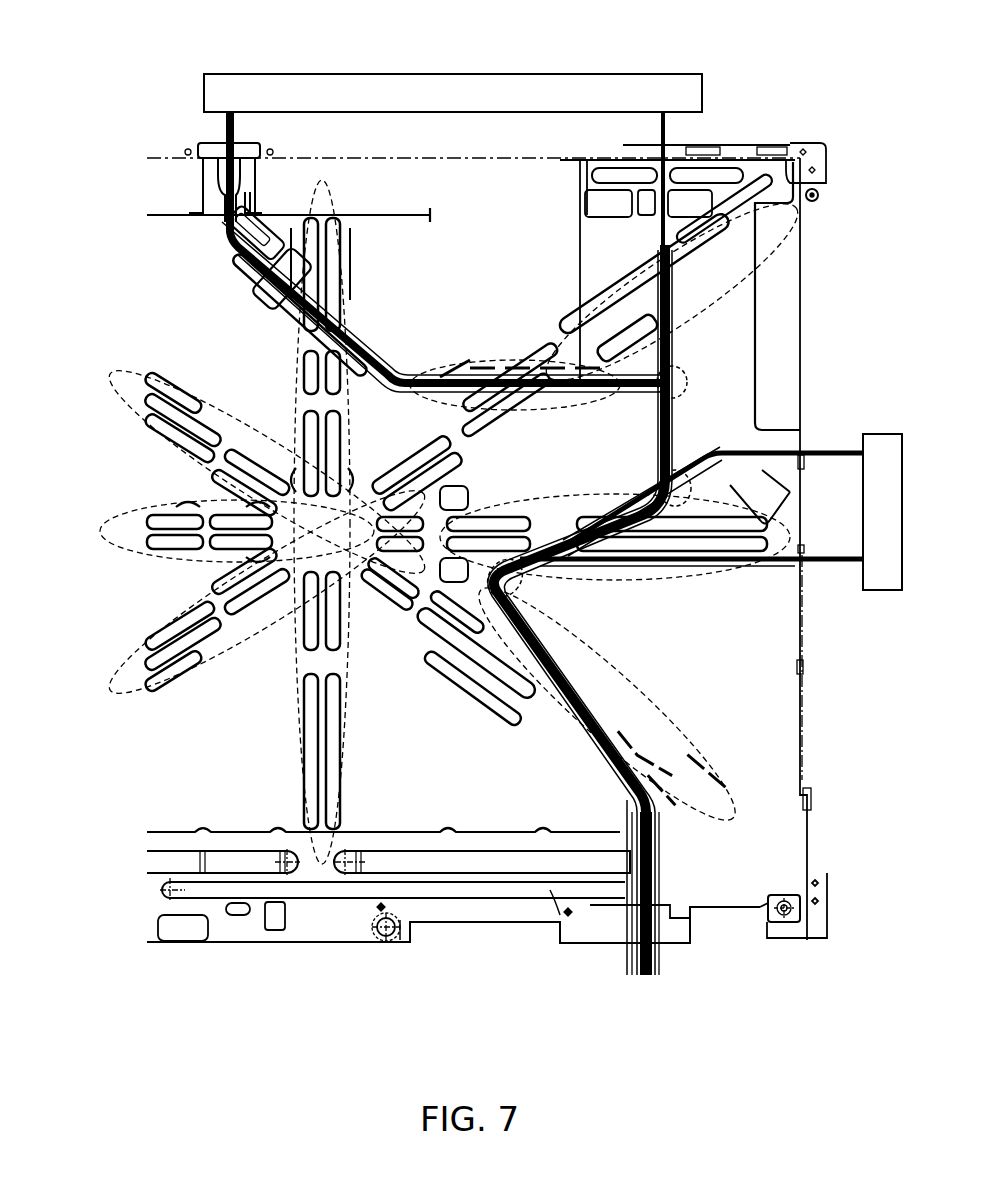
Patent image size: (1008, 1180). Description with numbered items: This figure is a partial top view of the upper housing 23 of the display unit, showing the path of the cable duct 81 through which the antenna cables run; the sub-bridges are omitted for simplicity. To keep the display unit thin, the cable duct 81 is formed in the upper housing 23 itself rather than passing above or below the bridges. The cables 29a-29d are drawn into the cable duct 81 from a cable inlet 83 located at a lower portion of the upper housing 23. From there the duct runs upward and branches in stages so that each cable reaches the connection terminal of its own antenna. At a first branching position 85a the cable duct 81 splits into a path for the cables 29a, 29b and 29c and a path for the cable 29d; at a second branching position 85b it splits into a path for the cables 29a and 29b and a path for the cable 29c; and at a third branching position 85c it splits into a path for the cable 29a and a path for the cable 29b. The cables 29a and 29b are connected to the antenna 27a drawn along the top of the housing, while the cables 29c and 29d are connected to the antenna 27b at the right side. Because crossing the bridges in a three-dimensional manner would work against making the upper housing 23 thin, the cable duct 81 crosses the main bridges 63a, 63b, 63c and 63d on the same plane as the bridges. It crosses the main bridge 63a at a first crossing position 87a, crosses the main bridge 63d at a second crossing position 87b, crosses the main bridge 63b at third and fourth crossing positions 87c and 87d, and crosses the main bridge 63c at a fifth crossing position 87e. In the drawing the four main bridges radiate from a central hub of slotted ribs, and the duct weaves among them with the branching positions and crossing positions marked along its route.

The upper housing 23 is at (442, 976).
The antenna 27a is at (404, 74).
The antenna 27b is at (880, 434).
The cable 29a is at (225, 122).
The cable 29b is at (670, 128).
The cable 29c is at (828, 450).
The cable 29d is at (852, 569).
The cables 29a-29d is at (680, 975).
The main bridge 63a is at (121, 376).
The main bridge 63b is at (121, 690).
The main bridge 63c is at (328, 188).
The main bridge 63d is at (118, 533).
The cable duct 81 is at (672, 855).
The cable inlet 83 is at (624, 945).
The first branching position 85a is at (512, 532).
The second branching position 85b is at (681, 472).
The third branching position 85c is at (679, 372).
The first crossing position 87a is at (596, 772).
The second crossing position 87b is at (580, 507).
The third crossing position 87c is at (535, 363).
The fourth crossing position 87d is at (681, 285).
The fifth crossing position 87e is at (356, 332).